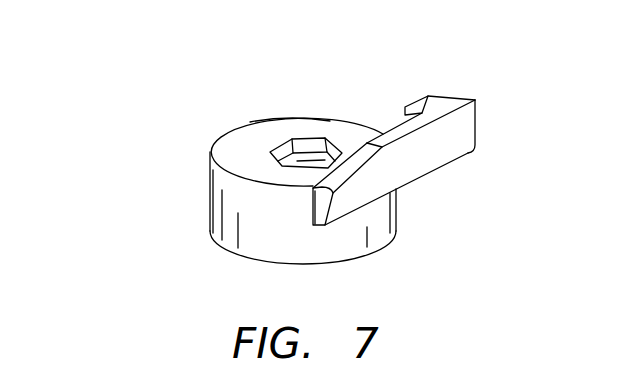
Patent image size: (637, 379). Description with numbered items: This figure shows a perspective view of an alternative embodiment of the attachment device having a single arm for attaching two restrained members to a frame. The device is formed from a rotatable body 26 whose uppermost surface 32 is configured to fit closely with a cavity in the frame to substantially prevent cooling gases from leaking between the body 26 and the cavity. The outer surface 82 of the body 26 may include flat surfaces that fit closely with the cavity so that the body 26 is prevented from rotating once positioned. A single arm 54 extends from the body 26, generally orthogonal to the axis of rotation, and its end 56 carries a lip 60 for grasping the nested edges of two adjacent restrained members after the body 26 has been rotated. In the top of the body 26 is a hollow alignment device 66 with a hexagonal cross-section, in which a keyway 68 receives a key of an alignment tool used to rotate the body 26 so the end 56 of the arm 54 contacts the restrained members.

The body 26 is at (210, 237).
The uppermost surface 32 is at (333, 130).
The arm 54 is at (428, 150).
The end 56 is at (476, 122).
The lip 60 is at (428, 95).
The alignment device 66 is at (312, 138).
The keyway 68 is at (276, 148).
The outer surface 82 is at (306, 219).